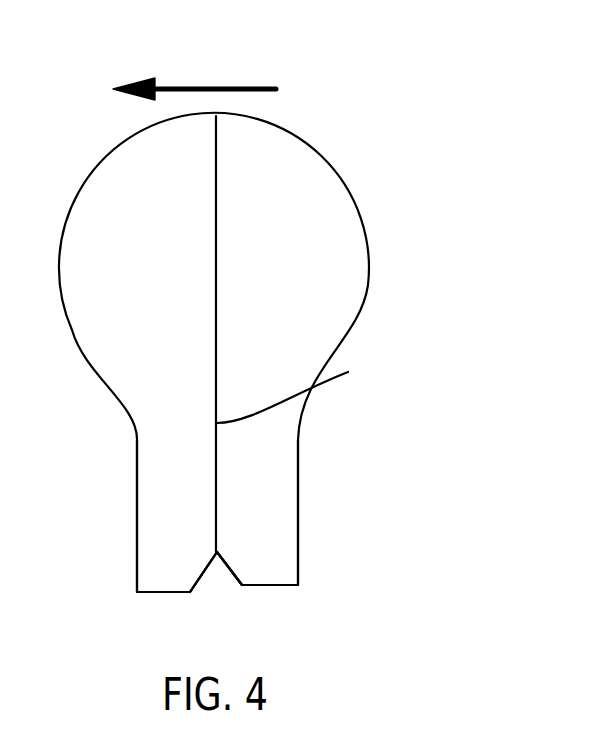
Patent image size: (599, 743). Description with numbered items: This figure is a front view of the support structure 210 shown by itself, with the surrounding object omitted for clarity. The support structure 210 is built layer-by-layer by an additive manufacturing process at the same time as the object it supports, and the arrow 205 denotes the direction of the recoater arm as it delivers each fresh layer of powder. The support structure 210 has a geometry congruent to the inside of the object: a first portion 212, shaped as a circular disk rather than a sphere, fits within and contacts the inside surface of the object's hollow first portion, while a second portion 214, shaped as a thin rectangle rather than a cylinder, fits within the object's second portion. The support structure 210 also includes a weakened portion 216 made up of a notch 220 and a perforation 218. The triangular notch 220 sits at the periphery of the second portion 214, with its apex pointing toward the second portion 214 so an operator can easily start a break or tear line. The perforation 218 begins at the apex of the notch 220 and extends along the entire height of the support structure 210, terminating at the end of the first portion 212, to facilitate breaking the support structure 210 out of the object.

The arrows 205 is at (213, 86).
The support structure 210 is at (380, 160).
The first portion 212 is at (133, 208).
The second portion 214 is at (188, 508).
The weakened portion 216 is at (268, 530).
The perforation 218 is at (330, 376).
The notch 220 is at (208, 578).